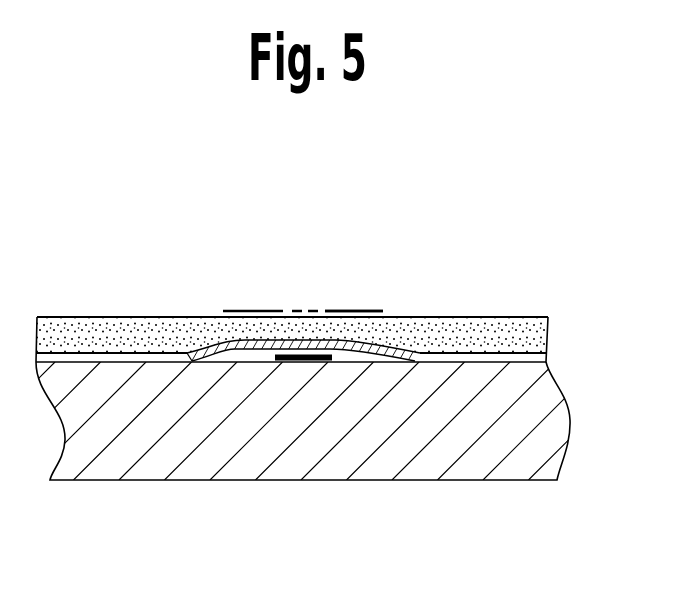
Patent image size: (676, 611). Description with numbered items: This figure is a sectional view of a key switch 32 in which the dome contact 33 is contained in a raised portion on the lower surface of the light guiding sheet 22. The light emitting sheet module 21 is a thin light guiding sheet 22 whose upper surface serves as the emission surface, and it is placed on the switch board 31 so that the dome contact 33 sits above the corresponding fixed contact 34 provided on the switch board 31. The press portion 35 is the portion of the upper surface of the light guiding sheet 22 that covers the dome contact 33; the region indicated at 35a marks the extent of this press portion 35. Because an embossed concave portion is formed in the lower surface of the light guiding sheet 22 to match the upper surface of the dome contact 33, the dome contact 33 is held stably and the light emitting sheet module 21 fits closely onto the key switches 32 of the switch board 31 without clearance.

The light emitting sheet module 21 is at (452, 312).
The light guiding sheet 22 is at (520, 317).
The switch board 31 is at (472, 458).
The key switch 32 is at (352, 352).
The dome contact 33 is at (218, 357).
The fixed contact 34 is at (295, 361).
The press portion 35 is at (238, 311).
The end portion of boundary line 35a is at (350, 340).